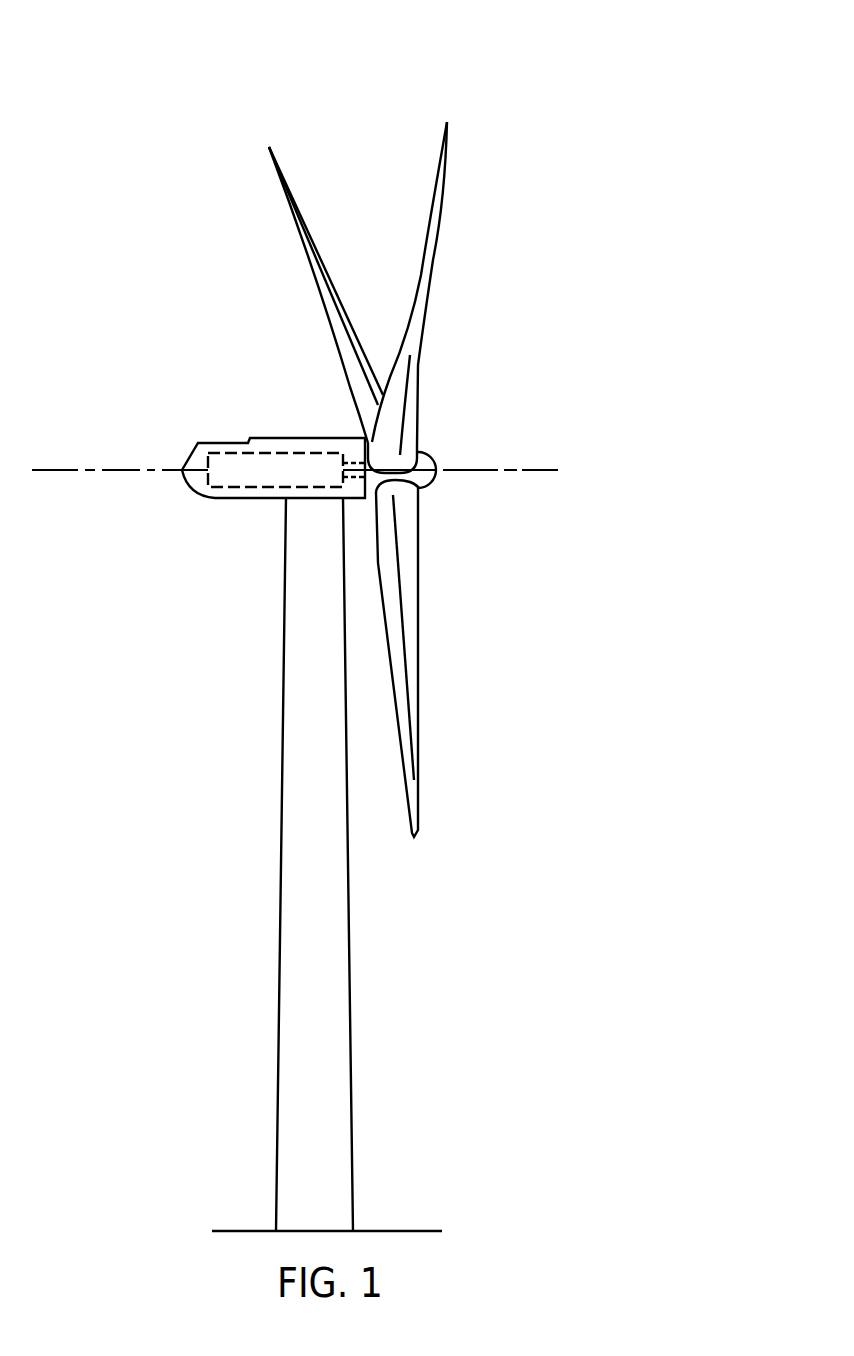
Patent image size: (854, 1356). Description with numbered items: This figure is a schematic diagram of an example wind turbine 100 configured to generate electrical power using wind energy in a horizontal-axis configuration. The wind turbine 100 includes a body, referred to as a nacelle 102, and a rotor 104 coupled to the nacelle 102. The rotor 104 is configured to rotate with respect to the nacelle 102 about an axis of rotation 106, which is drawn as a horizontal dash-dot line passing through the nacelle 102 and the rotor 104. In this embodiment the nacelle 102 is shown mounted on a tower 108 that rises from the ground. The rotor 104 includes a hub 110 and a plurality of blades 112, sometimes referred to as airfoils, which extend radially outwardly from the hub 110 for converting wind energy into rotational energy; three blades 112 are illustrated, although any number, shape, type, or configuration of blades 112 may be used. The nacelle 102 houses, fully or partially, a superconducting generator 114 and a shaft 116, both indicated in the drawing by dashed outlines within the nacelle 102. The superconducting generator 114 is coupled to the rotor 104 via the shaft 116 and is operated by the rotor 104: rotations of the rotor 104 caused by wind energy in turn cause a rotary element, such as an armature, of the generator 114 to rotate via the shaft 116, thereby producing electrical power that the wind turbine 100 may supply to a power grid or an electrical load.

The wind turbine 100 is at (413, 68).
The nacelle 102 is at (215, 505).
The rotor 104 is at (423, 492).
The axis of rotation 106 is at (535, 477).
The tower 108 is at (277, 1015).
The hub 110 is at (432, 454).
The blades 112 is at (296, 217).
The superconducting generator 114 is at (253, 489).
The shaft 116 is at (354, 479).